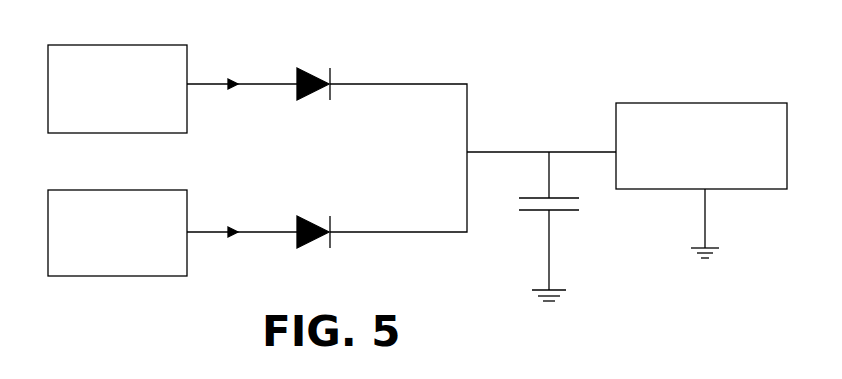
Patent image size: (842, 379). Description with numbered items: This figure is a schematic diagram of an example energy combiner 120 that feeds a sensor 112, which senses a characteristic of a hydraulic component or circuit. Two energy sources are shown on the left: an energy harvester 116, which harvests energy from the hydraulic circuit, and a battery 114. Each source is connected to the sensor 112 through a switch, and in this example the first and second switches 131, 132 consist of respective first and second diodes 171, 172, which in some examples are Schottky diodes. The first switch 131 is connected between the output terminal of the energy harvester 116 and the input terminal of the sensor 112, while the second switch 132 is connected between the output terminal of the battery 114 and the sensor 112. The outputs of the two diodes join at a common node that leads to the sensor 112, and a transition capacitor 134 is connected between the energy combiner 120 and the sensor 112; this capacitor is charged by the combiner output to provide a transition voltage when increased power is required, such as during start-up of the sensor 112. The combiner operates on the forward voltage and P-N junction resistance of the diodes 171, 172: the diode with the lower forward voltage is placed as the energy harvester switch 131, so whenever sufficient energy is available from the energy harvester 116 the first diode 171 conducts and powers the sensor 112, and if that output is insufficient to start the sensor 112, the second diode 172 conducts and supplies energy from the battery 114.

The energy harvester 116 is at (137, 45).
The battery 114 is at (143, 189).
The first diode 171 is at (300, 68).
The second diode 172 is at (298, 216).
The first switch 131 is at (345, 56).
The second switch 132 is at (352, 204).
The energy combiner 120 is at (458, 51).
The transition capacitor 134 is at (548, 255).
The sensor 112 is at (616, 125).